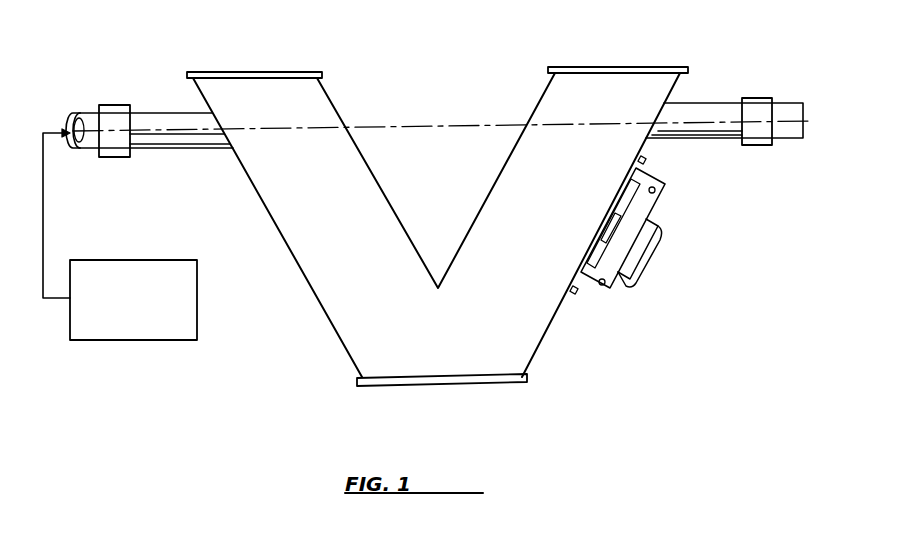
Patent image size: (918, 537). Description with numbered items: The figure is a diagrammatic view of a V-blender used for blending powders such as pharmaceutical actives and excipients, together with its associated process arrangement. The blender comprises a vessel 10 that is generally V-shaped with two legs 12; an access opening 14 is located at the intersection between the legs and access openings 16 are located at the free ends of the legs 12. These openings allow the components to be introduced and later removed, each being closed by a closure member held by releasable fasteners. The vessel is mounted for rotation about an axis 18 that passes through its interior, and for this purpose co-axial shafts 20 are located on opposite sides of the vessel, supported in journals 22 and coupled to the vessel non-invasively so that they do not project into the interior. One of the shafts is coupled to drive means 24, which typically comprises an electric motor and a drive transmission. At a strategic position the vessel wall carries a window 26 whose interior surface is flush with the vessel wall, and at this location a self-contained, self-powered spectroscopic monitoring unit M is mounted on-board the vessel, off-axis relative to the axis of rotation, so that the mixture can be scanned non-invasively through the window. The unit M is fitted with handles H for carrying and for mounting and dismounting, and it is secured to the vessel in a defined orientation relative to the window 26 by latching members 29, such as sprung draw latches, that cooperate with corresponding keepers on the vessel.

The vessel 10 is at (358, 90).
The legs 12 is at (490, 223).
The access opening 14 is at (498, 385).
The access openings 16 is at (230, 72).
The axis 18 is at (473, 126).
The co-axial shafts 20 is at (204, 141).
The journals 22 is at (110, 112).
The drive means 24 is at (120, 234).
The window 26 is at (598, 228).
The latching members 29 is at (647, 166).
The spectroscopic monitoring unit M is at (623, 238).
The handles H is at (637, 268).